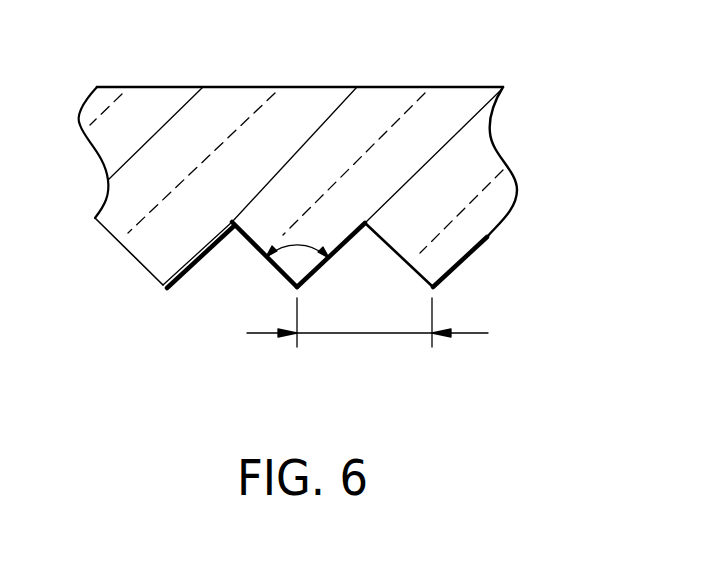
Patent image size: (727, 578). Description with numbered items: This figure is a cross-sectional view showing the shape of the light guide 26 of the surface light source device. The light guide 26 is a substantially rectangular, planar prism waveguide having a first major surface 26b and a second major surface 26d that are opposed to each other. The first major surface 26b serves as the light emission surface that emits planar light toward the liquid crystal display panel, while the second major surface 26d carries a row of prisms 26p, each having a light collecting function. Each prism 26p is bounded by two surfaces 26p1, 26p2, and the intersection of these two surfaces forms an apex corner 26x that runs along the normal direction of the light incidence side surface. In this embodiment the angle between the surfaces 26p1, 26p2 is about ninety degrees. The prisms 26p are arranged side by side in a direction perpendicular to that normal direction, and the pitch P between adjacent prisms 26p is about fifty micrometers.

The light guide 26 is at (317, 191).
The first major surface 26b is at (190, 87).
The second major surface 26d is at (136, 290).
The prism 26p is at (461, 234).
The first surface of prism 26p1 is at (257, 245).
The second surface of prism 26p2 is at (350, 258).
The apex corner 26x is at (295, 293).
The pitch P is at (358, 335).